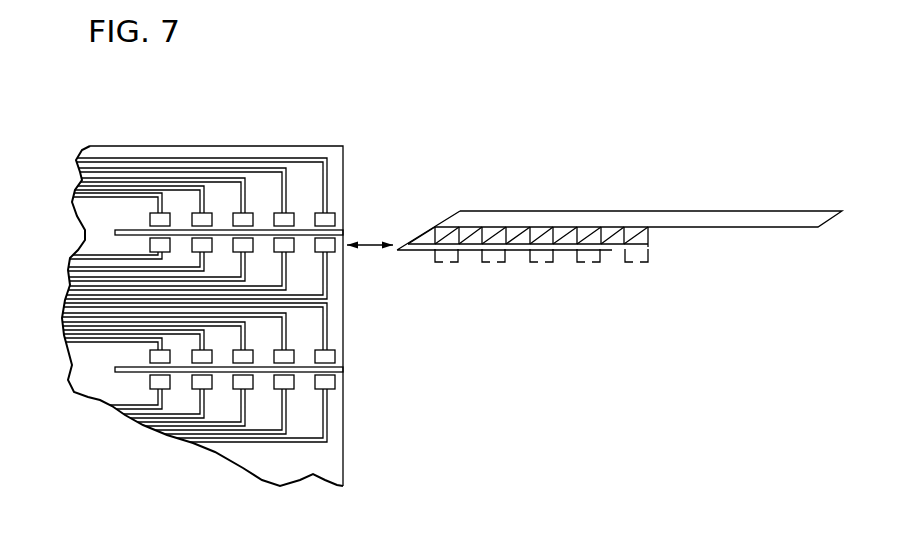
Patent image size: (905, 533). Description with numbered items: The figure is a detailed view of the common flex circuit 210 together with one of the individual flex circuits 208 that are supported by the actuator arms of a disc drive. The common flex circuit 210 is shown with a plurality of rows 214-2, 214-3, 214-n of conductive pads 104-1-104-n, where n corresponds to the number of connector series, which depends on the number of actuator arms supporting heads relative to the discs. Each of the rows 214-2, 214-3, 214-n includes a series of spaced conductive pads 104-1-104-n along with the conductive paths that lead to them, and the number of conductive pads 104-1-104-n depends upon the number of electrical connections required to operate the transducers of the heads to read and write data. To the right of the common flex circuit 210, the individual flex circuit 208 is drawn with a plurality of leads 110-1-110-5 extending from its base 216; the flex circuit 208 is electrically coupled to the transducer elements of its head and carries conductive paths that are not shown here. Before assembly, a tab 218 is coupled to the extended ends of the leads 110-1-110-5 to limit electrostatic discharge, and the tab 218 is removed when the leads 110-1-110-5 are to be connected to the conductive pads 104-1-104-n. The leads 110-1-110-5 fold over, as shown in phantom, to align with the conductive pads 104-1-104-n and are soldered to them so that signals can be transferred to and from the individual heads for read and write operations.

The conductive pads 104-1-104-n is at (322, 209).
The leads 110-1-110-5 is at (638, 262).
The flex circuit 208 is at (716, 216).
The common flex circuit 210 is at (236, 272).
The row of conductive pads 214-2 is at (242, 184).
The row of conductive pads 214-3 is at (83, 352).
The row of conductive pads 214-n is at (98, 388).
The base 216 is at (623, 210).
The tab 218 is at (668, 278).